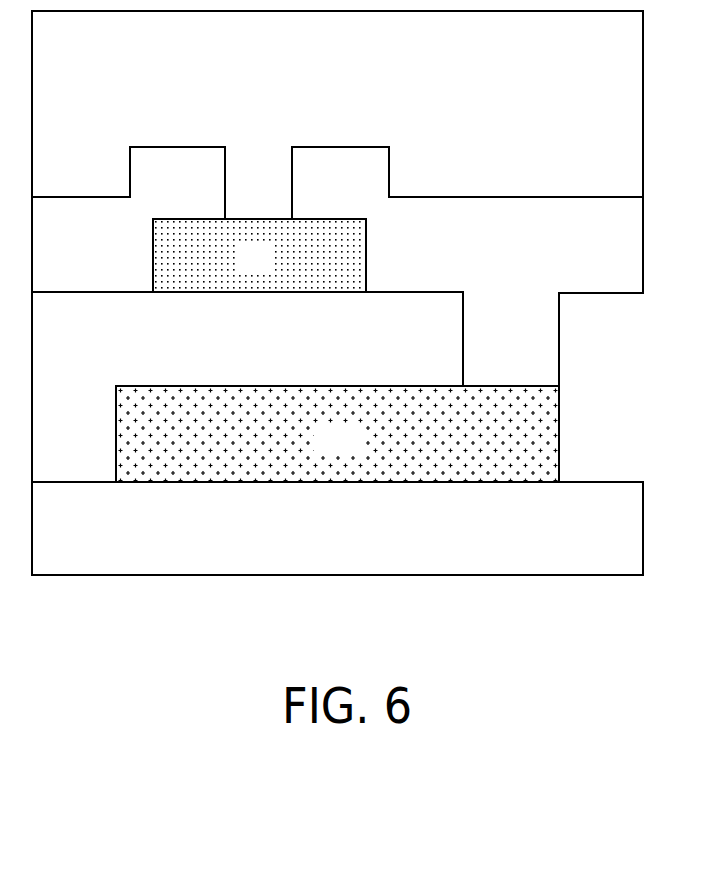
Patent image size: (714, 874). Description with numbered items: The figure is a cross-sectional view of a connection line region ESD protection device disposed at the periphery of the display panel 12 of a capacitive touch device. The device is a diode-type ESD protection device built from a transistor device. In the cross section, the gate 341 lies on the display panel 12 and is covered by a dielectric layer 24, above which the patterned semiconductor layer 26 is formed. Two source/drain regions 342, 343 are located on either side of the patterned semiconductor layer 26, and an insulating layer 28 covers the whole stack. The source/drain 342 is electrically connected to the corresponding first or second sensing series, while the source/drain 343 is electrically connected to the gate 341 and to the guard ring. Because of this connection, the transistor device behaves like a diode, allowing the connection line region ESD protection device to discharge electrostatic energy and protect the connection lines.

The display panel 12 is at (575, 542).
The dielectric layer 24 is at (241, 358).
The patterned semiconductor layer 26 is at (241, 272).
The insulating layer 28 is at (577, 103).
The gate 341 is at (360, 452).
The source/drain 342 is at (118, 261).
The source/drain 343 is at (528, 262).